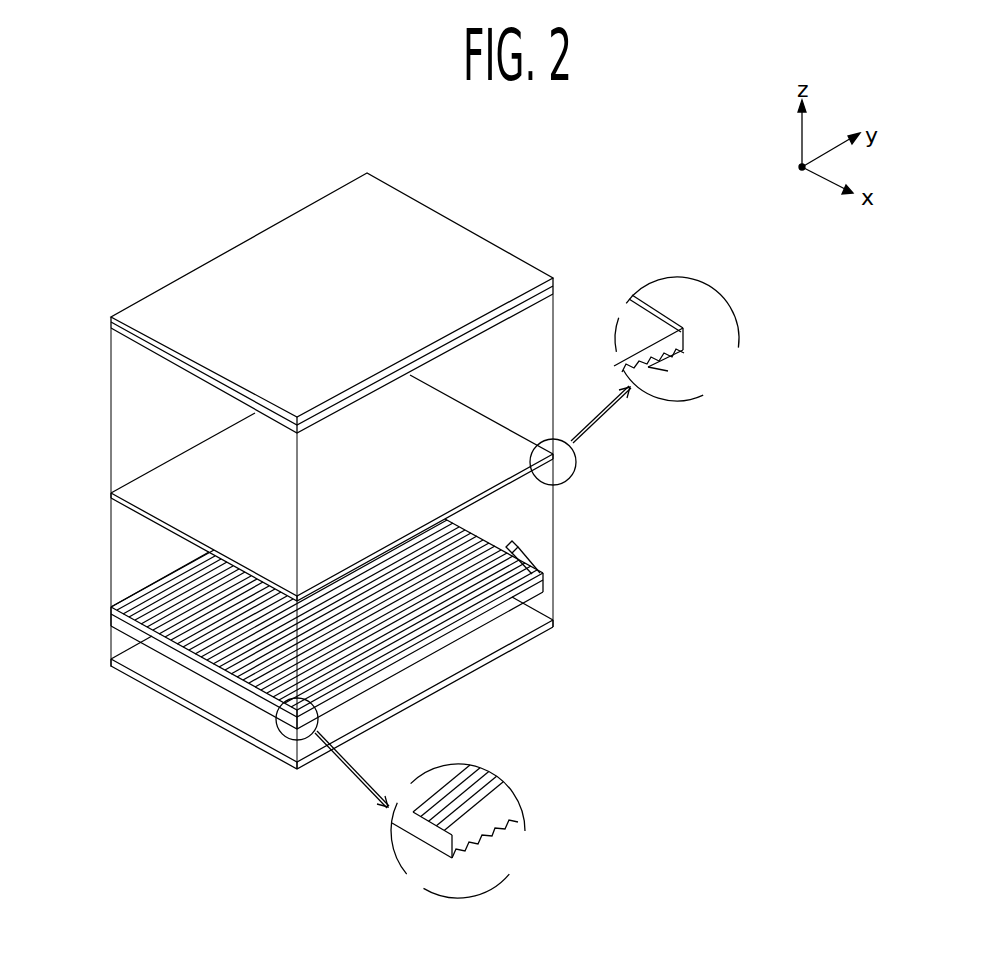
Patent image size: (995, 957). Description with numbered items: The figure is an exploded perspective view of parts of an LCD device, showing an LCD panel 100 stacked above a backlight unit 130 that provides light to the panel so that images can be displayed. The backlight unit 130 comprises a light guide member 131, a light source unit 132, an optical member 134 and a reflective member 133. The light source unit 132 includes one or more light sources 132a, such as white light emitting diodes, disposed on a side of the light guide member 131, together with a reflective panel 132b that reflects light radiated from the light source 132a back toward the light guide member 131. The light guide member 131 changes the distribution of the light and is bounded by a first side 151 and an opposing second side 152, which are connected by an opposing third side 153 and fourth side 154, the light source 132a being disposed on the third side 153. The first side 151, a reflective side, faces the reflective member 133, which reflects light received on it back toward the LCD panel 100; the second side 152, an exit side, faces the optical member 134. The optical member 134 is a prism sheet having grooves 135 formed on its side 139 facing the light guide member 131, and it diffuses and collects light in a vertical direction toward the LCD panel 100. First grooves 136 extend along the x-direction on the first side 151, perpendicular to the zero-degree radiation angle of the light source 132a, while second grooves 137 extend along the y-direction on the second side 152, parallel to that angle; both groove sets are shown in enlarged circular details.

The LCD panel 100 is at (475, 253).
The backlight unit 130 is at (701, 495).
The light guide member 131 is at (545, 586).
The light source unit 132 is at (640, 526).
The light source 132a is at (532, 575).
The reflective panel 132b is at (520, 547).
The reflective member 133 is at (530, 618).
The optical member 134 is at (492, 487).
The groove 135 is at (648, 366).
The first groove 136 is at (480, 836).
The second groove 137 is at (443, 785).
The side 139 is at (686, 354).
The first side 151 is at (470, 642).
The second side 152 is at (142, 572).
The third side 153 is at (538, 566).
The fourth side 154 is at (212, 676).